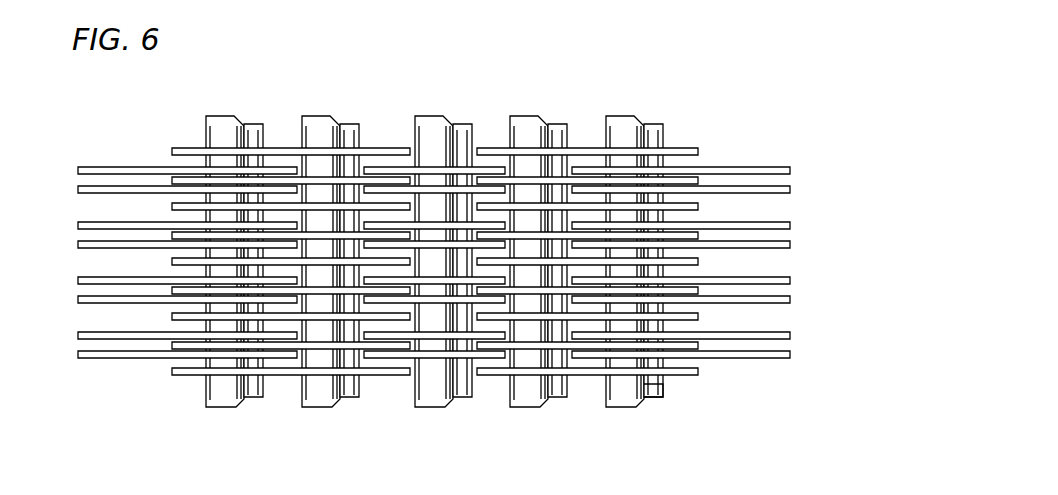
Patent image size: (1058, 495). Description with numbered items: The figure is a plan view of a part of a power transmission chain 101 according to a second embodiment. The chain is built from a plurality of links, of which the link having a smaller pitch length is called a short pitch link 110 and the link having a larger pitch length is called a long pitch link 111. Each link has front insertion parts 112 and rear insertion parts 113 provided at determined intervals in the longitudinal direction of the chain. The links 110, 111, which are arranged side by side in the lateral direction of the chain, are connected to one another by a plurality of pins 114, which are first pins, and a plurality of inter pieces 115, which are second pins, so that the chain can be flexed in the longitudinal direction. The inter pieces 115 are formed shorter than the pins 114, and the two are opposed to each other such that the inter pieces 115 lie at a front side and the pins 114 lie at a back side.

The power transmission chain 101 is at (740, 108).
The short pitch link 110 is at (592, 360).
The long pitch link 111 is at (188, 375).
The front insertion part 112 is at (460, 377).
The rear insertion part 113 is at (467, 289).
The pin 114 is at (223, 392).
The inter piece 115 is at (252, 387).